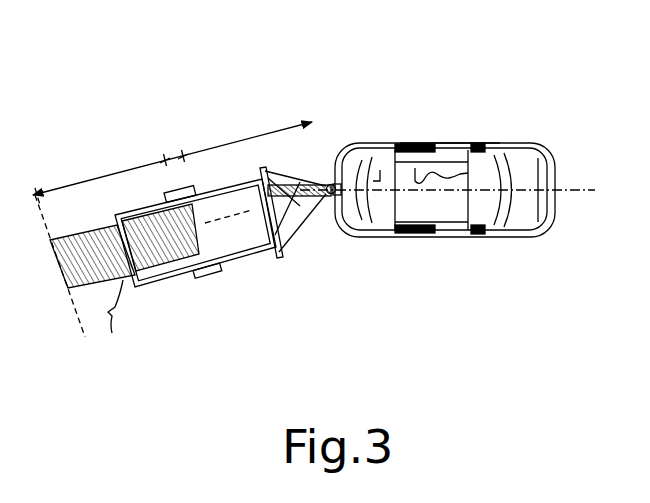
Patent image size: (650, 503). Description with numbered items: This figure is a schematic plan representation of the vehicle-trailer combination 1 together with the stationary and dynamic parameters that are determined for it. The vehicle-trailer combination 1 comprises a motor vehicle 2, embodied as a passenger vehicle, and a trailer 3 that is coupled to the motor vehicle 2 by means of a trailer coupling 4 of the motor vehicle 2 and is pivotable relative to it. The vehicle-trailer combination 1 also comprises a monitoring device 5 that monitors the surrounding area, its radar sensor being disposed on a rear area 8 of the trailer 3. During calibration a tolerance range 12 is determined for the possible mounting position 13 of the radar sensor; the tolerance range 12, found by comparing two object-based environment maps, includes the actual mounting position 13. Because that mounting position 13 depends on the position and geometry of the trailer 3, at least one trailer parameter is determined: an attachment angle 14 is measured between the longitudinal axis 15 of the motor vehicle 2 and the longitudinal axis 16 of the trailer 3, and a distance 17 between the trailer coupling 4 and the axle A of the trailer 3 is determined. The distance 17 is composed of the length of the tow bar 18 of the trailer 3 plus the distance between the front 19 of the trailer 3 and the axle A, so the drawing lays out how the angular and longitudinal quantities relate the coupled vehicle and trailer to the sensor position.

The vehicle-trailer combination 1 is at (411, 74).
The motor vehicle 2 is at (450, 143).
The trailer 3 is at (274, 247).
The trailer coupling 4 is at (338, 199).
The monitoring device 5 is at (147, 291).
The rear area 8 is at (112, 212).
The tolerance range 12 is at (90, 283).
The mounting position 13 is at (130, 262).
The attachment angle 14 is at (468, 173).
The longitudinal axis of the motor vehicle 15 is at (581, 188).
The longitudinal axis of the trailer 16 is at (380, 170).
The distance 17 is at (123, 170).
The tow bar 18 is at (284, 190).
The front 19 is at (283, 166).
The axle A is at (207, 281).